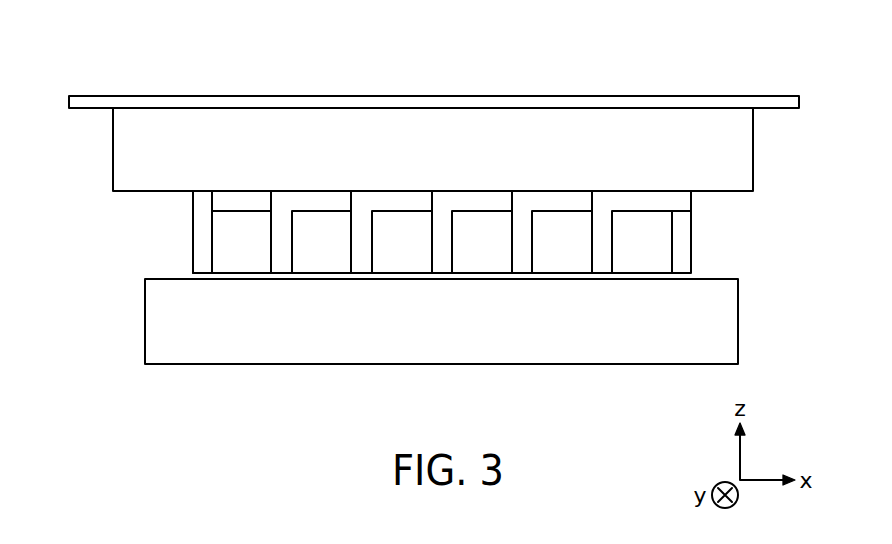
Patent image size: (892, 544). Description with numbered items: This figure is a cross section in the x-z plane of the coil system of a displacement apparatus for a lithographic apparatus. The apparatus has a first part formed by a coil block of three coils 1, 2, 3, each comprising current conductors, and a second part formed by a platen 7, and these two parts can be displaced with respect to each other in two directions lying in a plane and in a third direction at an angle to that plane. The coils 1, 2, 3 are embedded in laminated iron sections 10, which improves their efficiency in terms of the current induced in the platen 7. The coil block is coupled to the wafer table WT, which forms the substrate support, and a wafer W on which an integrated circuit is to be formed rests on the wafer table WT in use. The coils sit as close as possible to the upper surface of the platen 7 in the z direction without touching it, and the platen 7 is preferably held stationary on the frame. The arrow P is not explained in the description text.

The wafer W is at (709, 102).
The wafer table WT is at (740, 152).
The laminated iron sections 10 is at (202, 203).
The coil 1 is at (228, 237).
The coil 2 is at (403, 223).
The coil 3 is at (568, 255).
The platen 7 is at (725, 338).
The direction of movement P is at (117, 320).